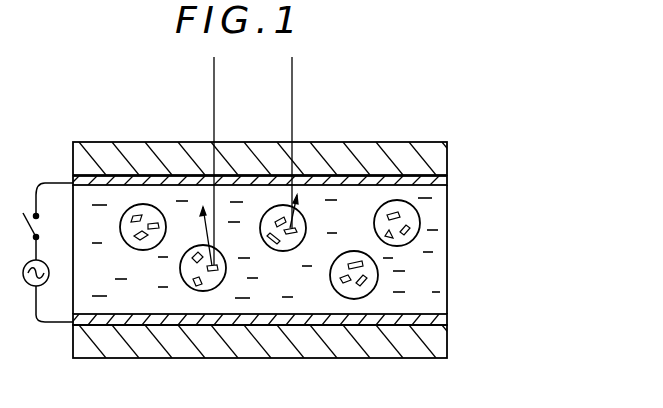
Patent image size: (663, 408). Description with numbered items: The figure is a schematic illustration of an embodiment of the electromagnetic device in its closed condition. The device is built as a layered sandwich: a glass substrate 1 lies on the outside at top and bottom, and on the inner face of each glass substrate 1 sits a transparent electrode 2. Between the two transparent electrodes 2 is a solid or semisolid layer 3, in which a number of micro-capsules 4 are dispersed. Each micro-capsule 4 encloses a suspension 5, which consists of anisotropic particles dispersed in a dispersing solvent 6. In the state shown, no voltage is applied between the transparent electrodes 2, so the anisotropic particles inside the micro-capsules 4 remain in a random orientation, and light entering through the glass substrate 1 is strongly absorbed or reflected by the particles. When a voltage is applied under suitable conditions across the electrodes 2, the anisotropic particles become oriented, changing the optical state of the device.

The glass substrate 1 is at (400, 152).
The transparent electrode 2 is at (430, 181).
The solid or semisolid layer 3 is at (432, 262).
The micro-capsule 4 is at (420, 218).
The suspension 5 is at (442, 272).
The dispersing solvent 6 is at (373, 292).